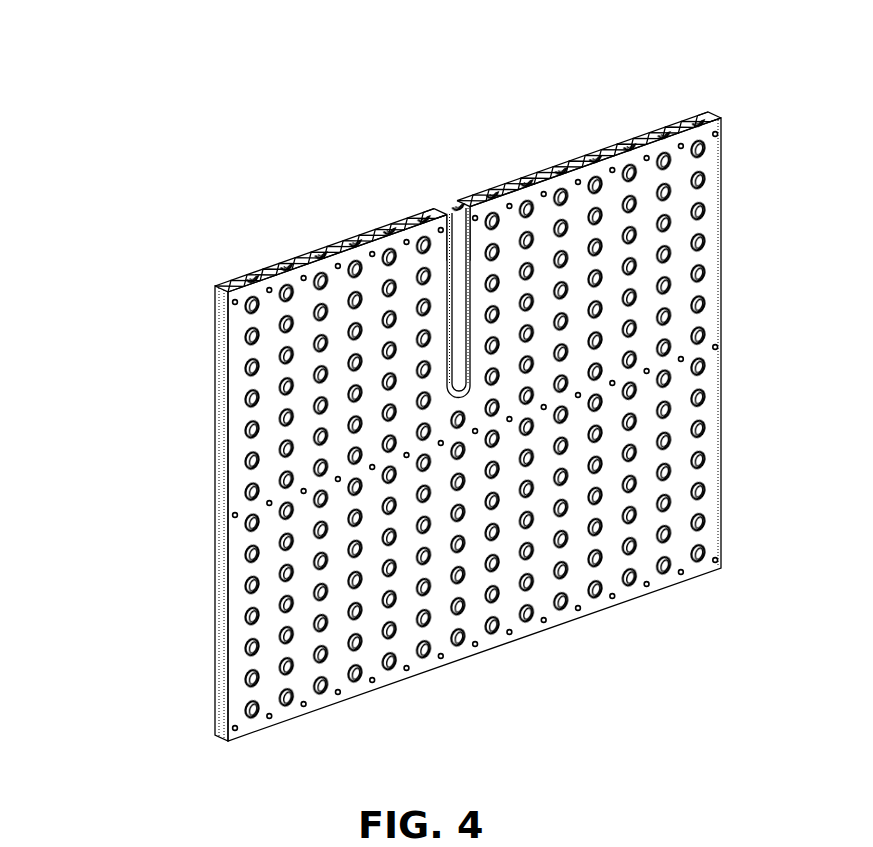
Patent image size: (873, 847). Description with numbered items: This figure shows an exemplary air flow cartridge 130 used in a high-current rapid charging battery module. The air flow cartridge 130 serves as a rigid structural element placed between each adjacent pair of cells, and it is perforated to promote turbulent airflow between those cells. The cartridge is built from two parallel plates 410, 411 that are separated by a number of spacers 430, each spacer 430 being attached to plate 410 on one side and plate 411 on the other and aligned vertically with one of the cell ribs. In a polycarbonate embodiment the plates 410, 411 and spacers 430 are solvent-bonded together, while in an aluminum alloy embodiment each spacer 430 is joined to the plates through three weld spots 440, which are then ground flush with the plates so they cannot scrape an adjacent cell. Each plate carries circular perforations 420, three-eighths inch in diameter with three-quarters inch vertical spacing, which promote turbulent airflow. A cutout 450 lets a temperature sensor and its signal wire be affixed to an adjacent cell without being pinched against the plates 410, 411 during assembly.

The air flow cartridge 130 is at (423, 382).
The plate 410 is at (613, 144).
The plate 411 is at (672, 137).
The circular perforations 420 is at (703, 243).
The spacers 430 is at (222, 290).
The weld spots 440 is at (232, 727).
The cutout 450 is at (450, 212).